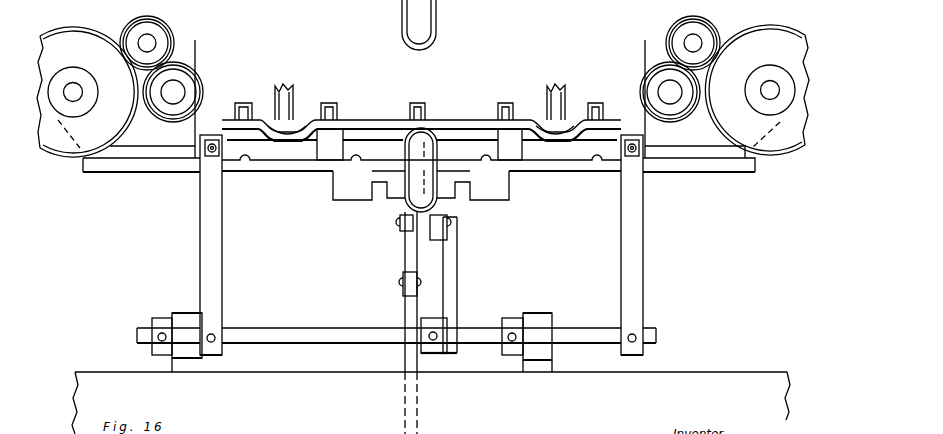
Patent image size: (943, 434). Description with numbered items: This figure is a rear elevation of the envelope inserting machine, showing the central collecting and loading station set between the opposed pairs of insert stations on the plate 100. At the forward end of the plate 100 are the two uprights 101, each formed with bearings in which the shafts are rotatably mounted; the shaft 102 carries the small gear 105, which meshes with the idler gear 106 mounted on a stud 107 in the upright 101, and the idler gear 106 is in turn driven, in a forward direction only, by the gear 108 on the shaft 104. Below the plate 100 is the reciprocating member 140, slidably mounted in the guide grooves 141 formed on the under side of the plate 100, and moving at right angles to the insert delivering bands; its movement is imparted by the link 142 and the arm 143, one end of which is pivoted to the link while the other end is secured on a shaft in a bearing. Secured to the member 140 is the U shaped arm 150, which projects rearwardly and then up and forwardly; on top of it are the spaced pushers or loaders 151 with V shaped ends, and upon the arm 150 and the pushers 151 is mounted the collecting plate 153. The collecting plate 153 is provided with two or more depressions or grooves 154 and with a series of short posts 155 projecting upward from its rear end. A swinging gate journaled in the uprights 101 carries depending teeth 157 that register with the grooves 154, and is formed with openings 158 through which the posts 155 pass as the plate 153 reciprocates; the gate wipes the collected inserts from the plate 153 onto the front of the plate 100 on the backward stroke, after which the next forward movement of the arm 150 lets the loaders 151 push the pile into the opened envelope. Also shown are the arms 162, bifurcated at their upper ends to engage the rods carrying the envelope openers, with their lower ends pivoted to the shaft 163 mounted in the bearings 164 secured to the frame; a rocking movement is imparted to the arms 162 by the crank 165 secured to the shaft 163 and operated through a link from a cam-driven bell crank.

The plate 100 is at (172, 163).
The upright 101 is at (147, 135).
The shaft 102 is at (175, 90).
The shaft 104 is at (72, 98).
The small gear 105 is at (203, 90).
The idler gear 106 is at (173, 28).
The stud 107 is at (146, 42).
The gear 108 is at (423, 91).
The reciprocating member 140 is at (387, 193).
The guide grooves 141 is at (367, 178).
The link 142 is at (418, 247).
The arm 143 is at (405, 307).
The U shaped arm 150 is at (425, 185).
The pusher 151 is at (317, 148).
The collecting plate 153 is at (353, 121).
The grooves 154 is at (290, 125).
The short posts 155 is at (497, 107).
The teeth 157 is at (290, 100).
The openings 158 is at (505, 101).
The arm 162 is at (213, 248).
The shaft 163 is at (287, 330).
The bearing 164 is at (227, 173).
The crank 165 is at (450, 260).